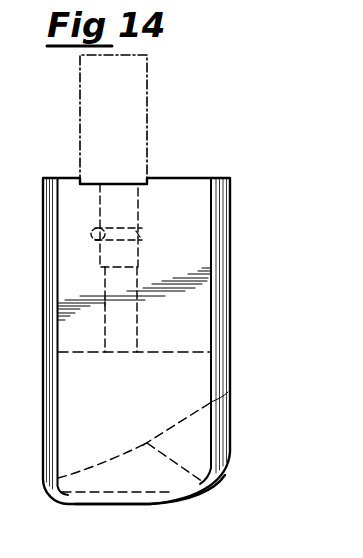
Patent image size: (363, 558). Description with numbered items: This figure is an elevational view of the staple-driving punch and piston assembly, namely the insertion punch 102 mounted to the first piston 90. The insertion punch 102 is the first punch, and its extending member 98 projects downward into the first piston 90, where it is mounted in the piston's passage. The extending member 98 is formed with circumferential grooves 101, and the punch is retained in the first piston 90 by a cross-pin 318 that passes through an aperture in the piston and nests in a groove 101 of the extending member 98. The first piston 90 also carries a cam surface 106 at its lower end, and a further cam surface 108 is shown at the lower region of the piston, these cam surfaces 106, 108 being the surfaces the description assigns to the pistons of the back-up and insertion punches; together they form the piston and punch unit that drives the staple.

The first piston 90 is at (232, 435).
The extending member 98 is at (131, 208).
The circumferential grooves 101 is at (144, 237).
The insertion punch 102 is at (148, 124).
The cam surface 106 is at (150, 505).
The cam surface 108 is at (206, 479).
The cross-pin 318 is at (91, 233).